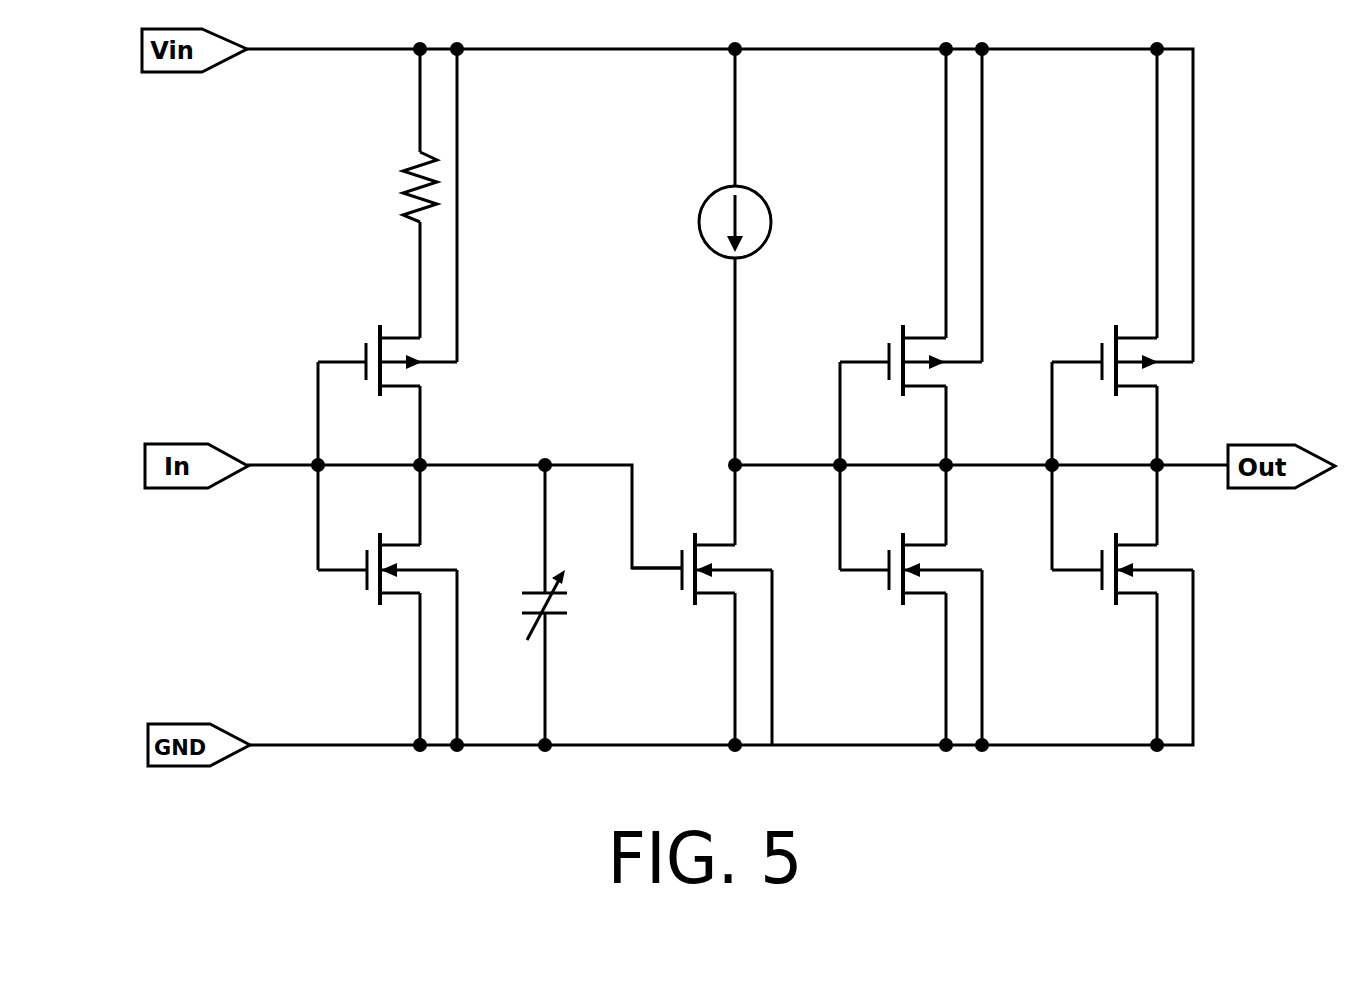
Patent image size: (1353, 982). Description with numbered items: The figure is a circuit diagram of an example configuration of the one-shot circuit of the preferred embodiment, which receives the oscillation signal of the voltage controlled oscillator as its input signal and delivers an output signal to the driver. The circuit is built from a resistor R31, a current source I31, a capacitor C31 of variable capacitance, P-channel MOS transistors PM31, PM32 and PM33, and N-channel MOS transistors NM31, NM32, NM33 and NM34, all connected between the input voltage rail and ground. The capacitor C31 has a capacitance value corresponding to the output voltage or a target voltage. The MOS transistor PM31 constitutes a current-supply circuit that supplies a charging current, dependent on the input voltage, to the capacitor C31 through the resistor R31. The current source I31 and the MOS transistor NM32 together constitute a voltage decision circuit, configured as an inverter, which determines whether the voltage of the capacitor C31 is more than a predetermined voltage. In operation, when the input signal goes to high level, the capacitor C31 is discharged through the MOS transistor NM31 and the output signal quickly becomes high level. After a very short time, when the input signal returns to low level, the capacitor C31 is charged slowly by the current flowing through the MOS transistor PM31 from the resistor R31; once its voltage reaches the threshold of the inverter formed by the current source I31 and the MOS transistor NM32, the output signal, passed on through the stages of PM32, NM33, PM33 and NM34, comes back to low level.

The resistor R31 is at (402, 182).
The P-channel MOS transistor PM31 is at (368, 328).
The N-channel MOS transistor NM31 is at (367, 598).
The capacitor of variable capacitance C31 is at (566, 602).
The N-channel MOS transistor NM32 is at (683, 598).
The current source I31 is at (770, 208).
The P-channel MOS transistor PM32 is at (890, 331).
The N-channel MOS transistor NM33 is at (892, 598).
The P-channel MOS transistor PM33 is at (1103, 331).
The N-channel MOS transistor NM34 is at (1105, 598).